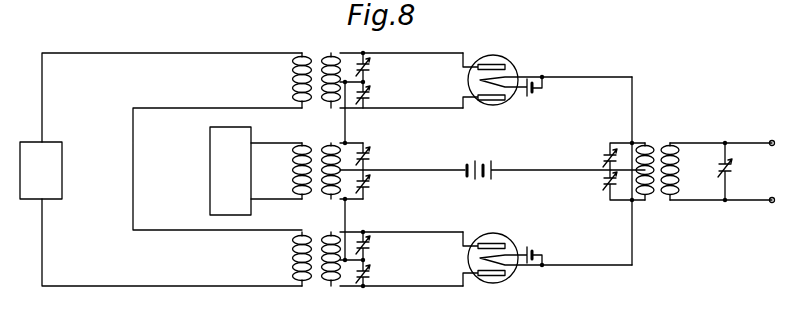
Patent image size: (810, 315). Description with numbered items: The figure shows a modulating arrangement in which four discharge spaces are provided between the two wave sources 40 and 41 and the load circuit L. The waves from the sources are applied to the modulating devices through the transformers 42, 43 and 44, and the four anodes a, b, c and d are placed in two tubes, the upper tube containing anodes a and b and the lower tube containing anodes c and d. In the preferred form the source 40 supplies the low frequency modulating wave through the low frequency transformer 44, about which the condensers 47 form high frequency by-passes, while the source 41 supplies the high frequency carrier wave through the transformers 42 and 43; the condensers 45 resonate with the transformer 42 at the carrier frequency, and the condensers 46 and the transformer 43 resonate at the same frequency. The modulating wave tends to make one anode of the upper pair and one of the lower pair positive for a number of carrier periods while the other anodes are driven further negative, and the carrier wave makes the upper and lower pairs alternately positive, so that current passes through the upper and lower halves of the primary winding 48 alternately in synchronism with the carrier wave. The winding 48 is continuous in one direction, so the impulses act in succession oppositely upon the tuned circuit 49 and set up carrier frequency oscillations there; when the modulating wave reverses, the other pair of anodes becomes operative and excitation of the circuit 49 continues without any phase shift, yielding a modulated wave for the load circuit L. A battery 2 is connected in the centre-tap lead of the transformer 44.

The wave source 40 is at (217, 169).
The wave source 41 is at (161, 169).
The transformer 42 is at (316, 47).
The transformer 43 is at (316, 228).
The low frequency transformer 44 is at (316, 138).
The condensers 45 is at (370, 66).
The condensers 46 is at (370, 244).
The condensers 47 is at (370, 157).
The primary winding 48 is at (658, 142).
The tuned circuit 49 is at (721, 171).
The battery 2 is at (486, 164).
The anode a is at (505, 66).
The anode b is at (500, 100).
The anode c is at (498, 244).
The anode d is at (497, 276).
The load circuit L is at (760, 172).